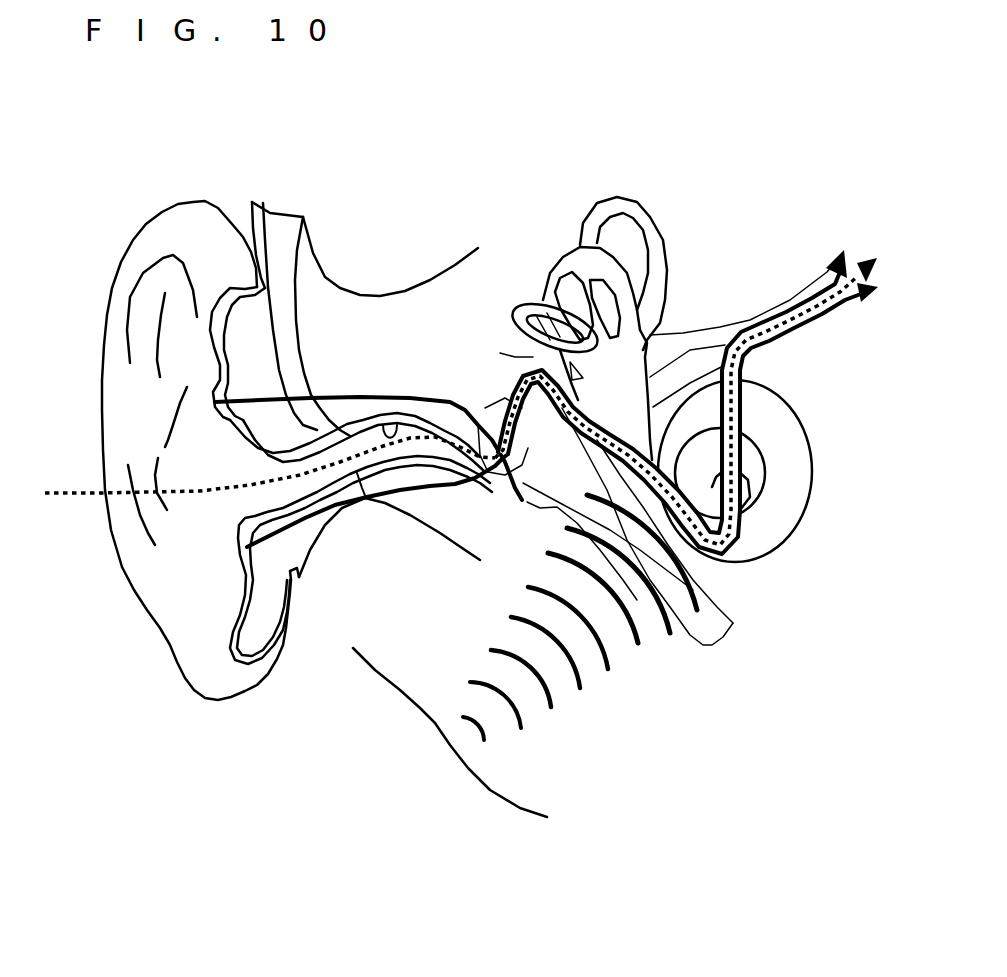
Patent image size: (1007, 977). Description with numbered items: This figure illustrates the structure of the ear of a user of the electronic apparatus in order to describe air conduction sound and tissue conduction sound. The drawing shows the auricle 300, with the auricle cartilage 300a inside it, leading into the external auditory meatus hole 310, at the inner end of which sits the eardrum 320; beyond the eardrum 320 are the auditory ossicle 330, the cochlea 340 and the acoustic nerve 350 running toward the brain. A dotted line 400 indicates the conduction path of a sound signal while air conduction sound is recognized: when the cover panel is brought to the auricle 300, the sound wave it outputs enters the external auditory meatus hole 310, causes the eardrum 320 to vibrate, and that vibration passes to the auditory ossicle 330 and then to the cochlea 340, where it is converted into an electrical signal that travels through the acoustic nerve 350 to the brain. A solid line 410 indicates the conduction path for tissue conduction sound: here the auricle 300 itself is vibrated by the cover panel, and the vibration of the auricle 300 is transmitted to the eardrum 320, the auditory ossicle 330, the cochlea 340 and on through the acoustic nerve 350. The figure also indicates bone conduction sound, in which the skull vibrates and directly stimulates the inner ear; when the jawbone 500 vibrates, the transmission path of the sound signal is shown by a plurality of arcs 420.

The auricle 300 is at (200, 422).
The auricle cartilage 300a is at (361, 458).
The external auditory meatus hole 310 is at (368, 389).
The eardrum 320 is at (413, 583).
The auditory ossicle 330 is at (583, 318).
The cochlea 340 is at (737, 491).
The acoustic nerve 350 is at (686, 395).
The dotted line 400 is at (270, 504).
The solid line 410 is at (146, 508).
The arcs 420 is at (598, 590).
The jawbone 500 is at (450, 750).